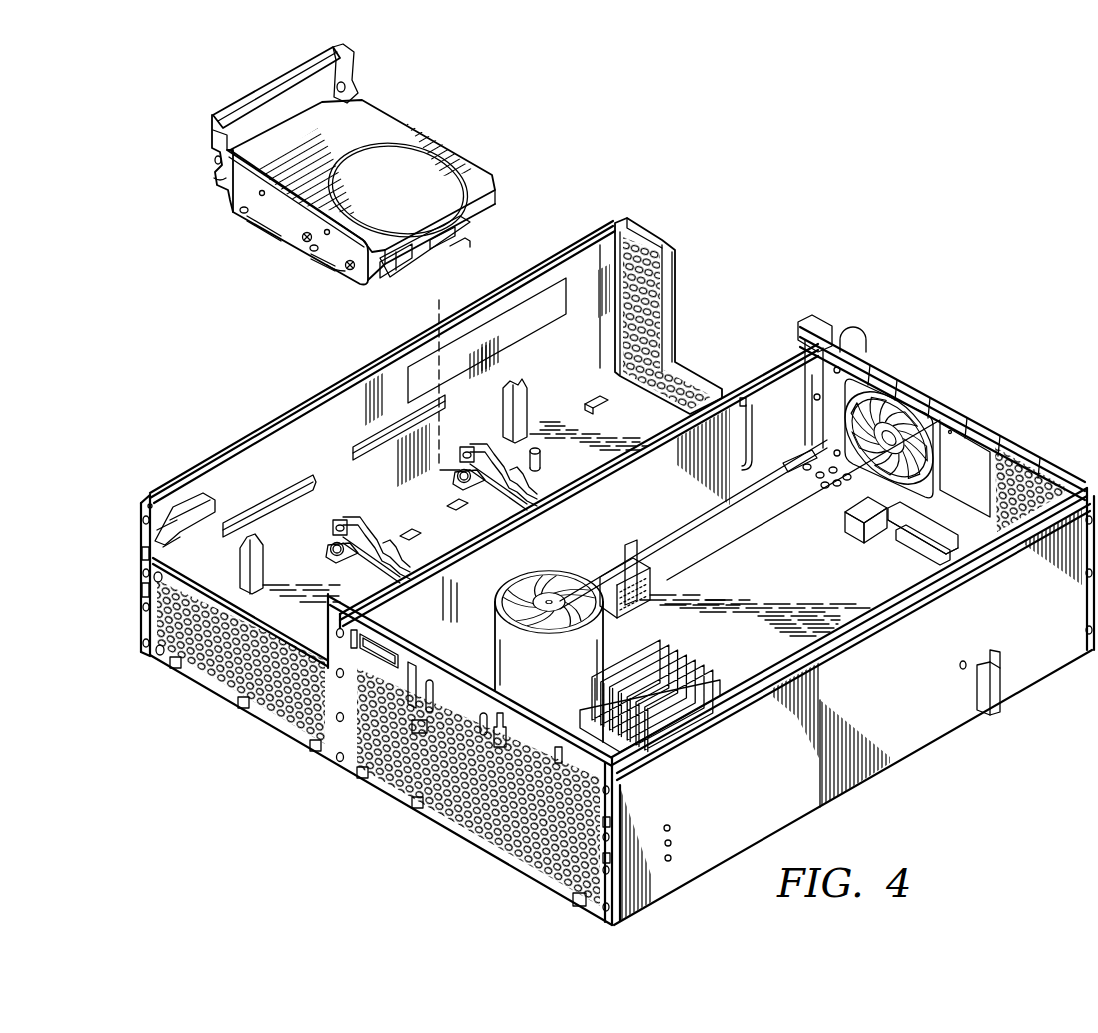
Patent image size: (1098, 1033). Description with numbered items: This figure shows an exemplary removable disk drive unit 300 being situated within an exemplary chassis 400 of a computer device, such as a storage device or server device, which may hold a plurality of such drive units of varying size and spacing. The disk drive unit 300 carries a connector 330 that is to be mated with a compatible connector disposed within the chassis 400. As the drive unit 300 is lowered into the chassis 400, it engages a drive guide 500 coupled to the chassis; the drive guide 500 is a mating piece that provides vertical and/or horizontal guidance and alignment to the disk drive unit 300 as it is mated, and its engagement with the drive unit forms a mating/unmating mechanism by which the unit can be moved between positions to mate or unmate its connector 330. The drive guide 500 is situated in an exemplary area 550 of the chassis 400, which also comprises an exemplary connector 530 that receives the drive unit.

The removable disk drive unit 300 is at (434, 116).
The connector 330 is at (462, 245).
The chassis 400 is at (248, 431).
The drive guide 500 is at (368, 518).
The connector 530 is at (627, 580).
The area 550 is at (566, 420).